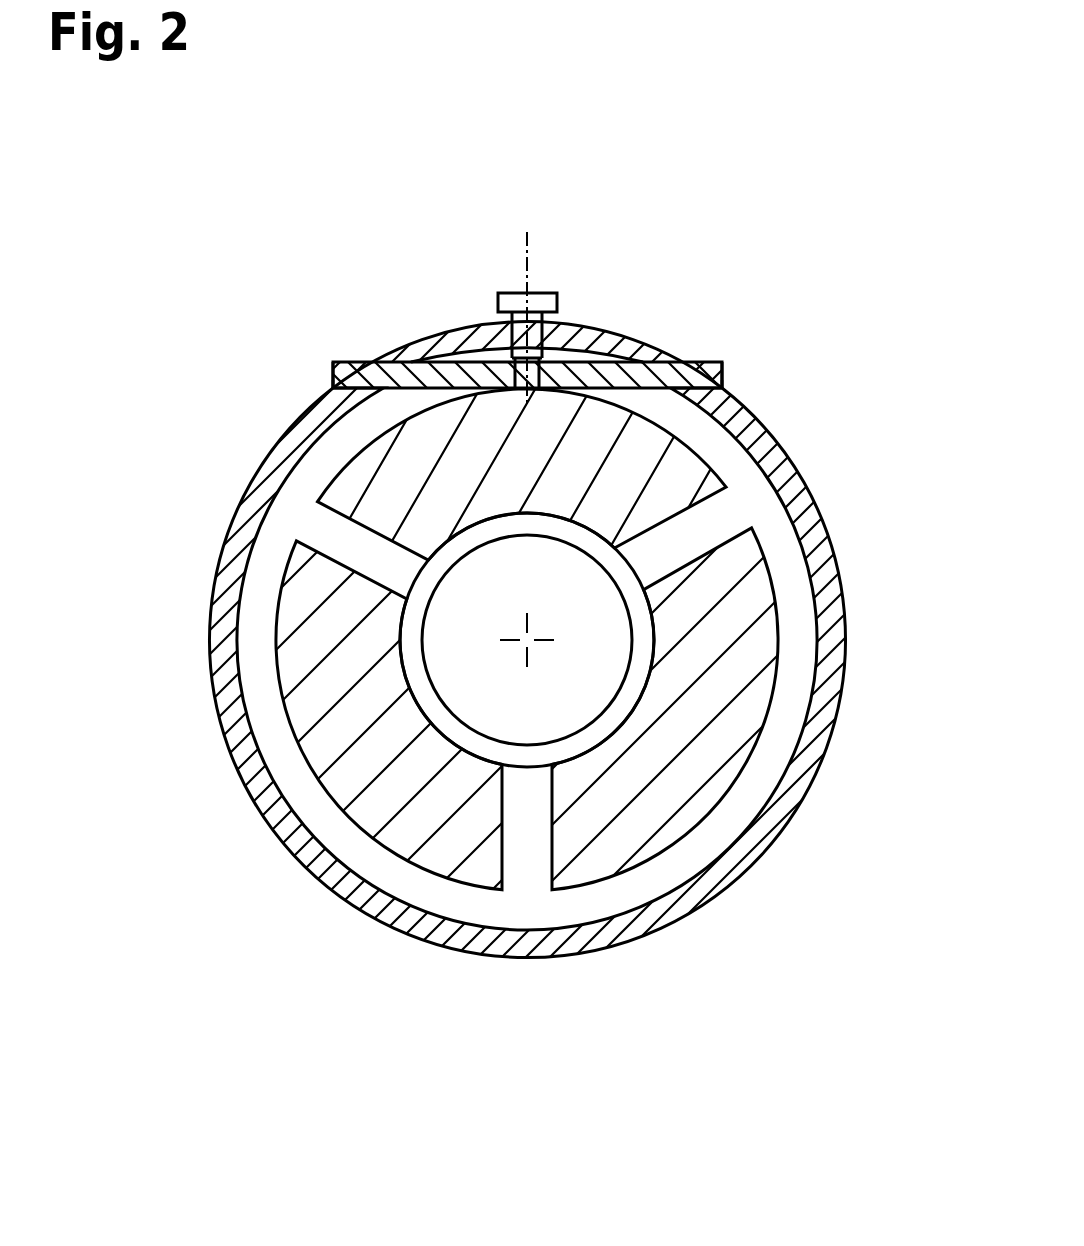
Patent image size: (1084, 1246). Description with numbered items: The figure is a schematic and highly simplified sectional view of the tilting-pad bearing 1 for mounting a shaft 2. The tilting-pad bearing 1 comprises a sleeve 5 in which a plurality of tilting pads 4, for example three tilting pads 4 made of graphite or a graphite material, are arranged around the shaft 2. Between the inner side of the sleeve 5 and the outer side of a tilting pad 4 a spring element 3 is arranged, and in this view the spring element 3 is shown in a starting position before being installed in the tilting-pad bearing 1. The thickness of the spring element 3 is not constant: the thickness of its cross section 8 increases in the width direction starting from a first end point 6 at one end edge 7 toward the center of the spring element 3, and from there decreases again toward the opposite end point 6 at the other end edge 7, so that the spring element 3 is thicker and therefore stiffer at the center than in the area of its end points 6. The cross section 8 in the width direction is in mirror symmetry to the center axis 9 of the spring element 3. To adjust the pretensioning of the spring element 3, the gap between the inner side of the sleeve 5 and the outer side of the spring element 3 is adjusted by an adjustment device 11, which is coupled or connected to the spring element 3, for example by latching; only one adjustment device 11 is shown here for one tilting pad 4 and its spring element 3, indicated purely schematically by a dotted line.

The tilting-pad bearing 1 is at (835, 462).
The shaft 2 is at (467, 665).
The spring element 3 is at (486, 362).
The tilting pad 4 is at (405, 487).
The sleeve 5 is at (822, 692).
The end point 6 is at (333, 381).
The end edge 7 is at (333, 387).
The cross section 8 is at (640, 372).
The center axis 9 is at (527, 236).
The adjustment device 11 is at (563, 300).